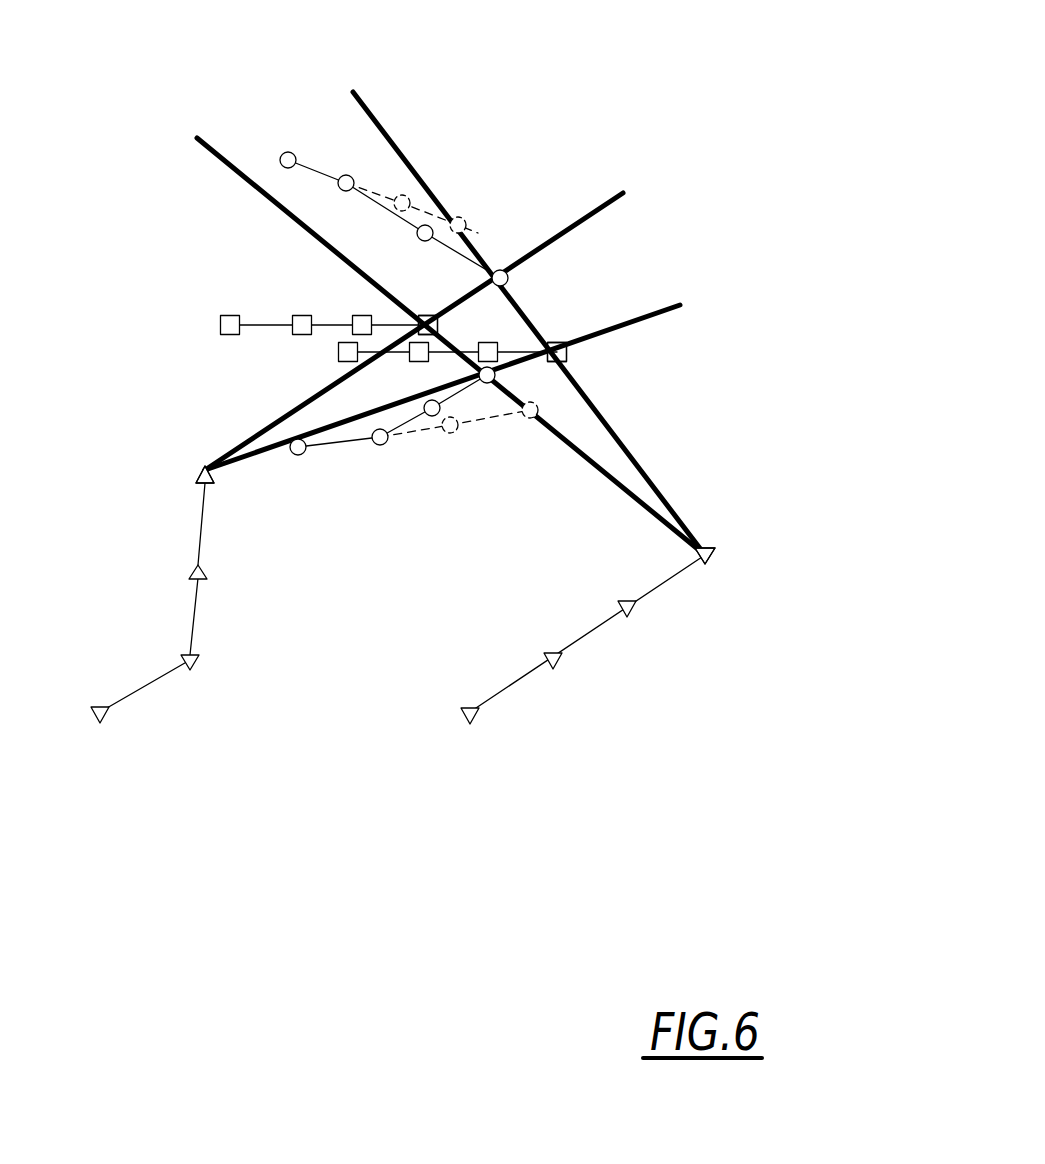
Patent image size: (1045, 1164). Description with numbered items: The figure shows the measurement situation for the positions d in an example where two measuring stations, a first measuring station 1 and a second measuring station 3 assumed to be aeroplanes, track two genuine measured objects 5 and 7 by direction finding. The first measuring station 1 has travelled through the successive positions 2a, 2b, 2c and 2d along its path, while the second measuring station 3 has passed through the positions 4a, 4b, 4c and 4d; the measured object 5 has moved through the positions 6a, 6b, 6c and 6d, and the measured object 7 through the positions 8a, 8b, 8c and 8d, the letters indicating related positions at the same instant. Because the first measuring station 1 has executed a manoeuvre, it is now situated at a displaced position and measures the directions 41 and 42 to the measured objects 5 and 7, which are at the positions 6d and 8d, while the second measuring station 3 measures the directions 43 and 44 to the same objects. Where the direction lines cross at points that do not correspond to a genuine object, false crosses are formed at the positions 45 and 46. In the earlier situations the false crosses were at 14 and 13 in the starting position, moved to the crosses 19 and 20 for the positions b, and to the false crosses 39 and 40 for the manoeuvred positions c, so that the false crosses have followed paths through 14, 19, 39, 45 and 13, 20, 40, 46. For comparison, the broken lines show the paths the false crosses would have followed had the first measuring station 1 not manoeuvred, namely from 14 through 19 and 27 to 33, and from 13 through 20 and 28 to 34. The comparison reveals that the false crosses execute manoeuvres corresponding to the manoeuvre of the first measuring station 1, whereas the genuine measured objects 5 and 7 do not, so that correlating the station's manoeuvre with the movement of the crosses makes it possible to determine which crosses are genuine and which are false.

The first measuring station 1 is at (218, 481).
The second measuring station 3 is at (720, 553).
The measured object 5 is at (434, 316).
The measured object 7 is at (567, 340).
The false cross 13 is at (296, 456).
The false cross 14 is at (286, 152).
The cross 19 is at (344, 175).
The cross 20 is at (376, 445).
The false cross position 27 is at (405, 195).
The false cross position 28 is at (458, 427).
The false cross position 33 is at (465, 217).
The false cross position 34 is at (538, 410).
The false cross 39 is at (427, 225).
The false cross 40 is at (424, 409).
The direction 41 is at (612, 193).
The direction 42 is at (668, 311).
The direction 43 is at (207, 152).
The direction 44 is at (373, 112).
The false cross 45 is at (506, 273).
The false cross 46 is at (496, 376).
The starting position of the first measuring station 2a is at (106, 718).
The position of the first measuring station 2b is at (195, 667).
The position of the first measuring station 2c is at (188, 573).
The position of the first measuring station 2d is at (196, 475).
The starting position of the second measuring station 4a is at (476, 720).
The position of the second measuring station 4b is at (560, 664).
The position of the second measuring station 4c is at (635, 613).
The position of the second measuring station 4d is at (714, 563).
The starting position of measured object 5 6a is at (220, 325).
The position of measured object 5 6b is at (302, 316).
The position of measured object 5 6c is at (362, 316).
The position of measured object 5 6d is at (424, 316).
The starting position of measured object 7 8a is at (340, 350).
The position of measured object 7 8b is at (418, 362).
The position of measured object 7 8c is at (492, 343).
The position of measured object 7 8d is at (567, 352).